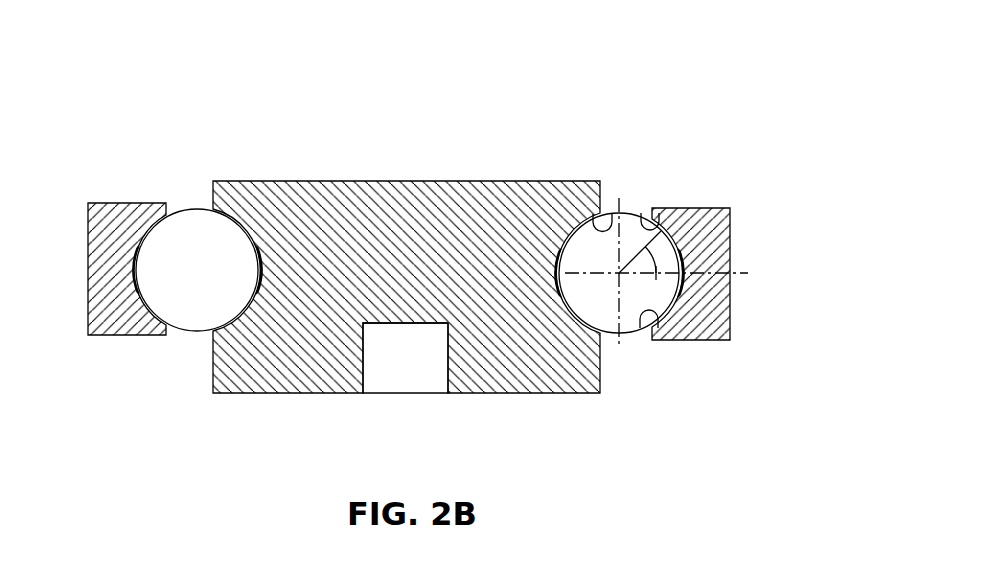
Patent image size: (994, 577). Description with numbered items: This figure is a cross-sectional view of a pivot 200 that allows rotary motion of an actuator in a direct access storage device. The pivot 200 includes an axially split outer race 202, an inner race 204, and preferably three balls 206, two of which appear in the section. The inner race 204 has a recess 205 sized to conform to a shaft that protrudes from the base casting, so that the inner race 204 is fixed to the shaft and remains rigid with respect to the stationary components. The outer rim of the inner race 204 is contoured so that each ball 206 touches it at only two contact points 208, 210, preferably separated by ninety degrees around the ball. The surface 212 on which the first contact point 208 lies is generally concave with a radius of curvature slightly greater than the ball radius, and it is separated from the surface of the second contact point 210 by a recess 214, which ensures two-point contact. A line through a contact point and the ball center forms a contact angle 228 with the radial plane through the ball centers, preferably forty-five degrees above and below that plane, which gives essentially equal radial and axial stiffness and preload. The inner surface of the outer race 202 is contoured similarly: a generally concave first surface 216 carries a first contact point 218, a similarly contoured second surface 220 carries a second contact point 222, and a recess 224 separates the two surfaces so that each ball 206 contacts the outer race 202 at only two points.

The pivot 200 is at (468, 145).
The axially split outer race 202 is at (105, 204).
The inner race 204 is at (528, 394).
The recess 205 is at (403, 378).
The balls 206 is at (192, 321).
The first contact point 208 is at (566, 209).
The second contact point 210 is at (590, 325).
The surface 212 is at (613, 211).
The recess 214 is at (558, 262).
The first surface 216 is at (648, 222).
The first contact point 218 is at (672, 212).
The second surface 220 is at (641, 312).
The second contact point 222 is at (672, 303).
The recess 224 is at (685, 285).
The contact angle 228 is at (655, 258).